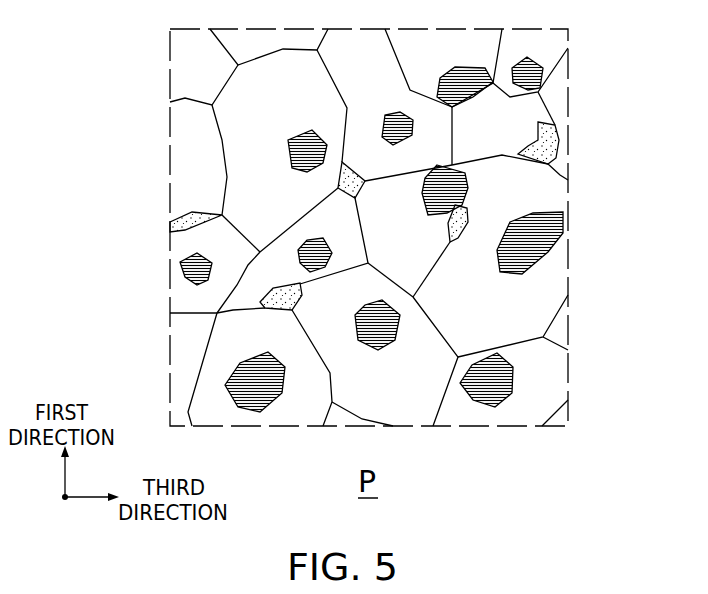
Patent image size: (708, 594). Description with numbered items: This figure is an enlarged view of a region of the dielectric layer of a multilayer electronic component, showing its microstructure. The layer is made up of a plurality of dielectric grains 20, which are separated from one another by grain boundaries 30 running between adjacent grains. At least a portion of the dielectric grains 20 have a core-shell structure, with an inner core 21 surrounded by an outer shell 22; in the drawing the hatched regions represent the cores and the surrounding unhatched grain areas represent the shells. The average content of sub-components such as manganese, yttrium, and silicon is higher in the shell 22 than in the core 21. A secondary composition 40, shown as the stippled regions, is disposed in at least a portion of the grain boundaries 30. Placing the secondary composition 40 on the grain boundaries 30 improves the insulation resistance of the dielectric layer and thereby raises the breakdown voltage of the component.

The dielectric grains 20 is at (423, 227).
The core 21 is at (557, 237).
The shell 22 is at (553, 278).
The grain boundaries 30 is at (558, 170).
The secondary composition 40 is at (558, 125).